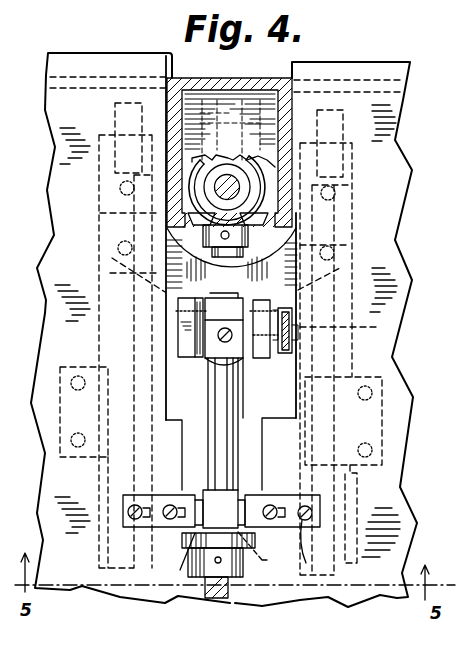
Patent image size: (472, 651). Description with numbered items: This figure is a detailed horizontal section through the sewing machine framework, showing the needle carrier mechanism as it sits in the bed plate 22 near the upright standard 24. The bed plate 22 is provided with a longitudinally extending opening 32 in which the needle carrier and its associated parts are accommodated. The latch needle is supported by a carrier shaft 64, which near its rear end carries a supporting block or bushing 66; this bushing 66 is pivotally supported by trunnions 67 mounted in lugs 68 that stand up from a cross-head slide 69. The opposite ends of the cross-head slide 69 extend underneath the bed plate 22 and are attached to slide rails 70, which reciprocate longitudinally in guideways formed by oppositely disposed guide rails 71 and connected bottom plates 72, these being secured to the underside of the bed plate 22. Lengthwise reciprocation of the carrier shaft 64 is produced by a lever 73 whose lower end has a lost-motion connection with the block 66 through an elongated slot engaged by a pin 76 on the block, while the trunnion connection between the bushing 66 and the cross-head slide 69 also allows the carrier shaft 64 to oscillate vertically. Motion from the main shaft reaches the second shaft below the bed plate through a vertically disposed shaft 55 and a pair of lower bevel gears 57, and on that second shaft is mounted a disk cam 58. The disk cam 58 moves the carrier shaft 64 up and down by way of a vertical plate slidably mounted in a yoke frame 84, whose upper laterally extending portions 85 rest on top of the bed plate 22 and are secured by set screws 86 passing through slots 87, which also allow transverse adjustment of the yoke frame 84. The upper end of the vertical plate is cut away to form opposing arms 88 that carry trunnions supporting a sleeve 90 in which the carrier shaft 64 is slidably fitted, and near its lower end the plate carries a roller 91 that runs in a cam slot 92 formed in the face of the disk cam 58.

The bed plate 22 is at (102, 53).
The upright standard 24 is at (292, 127).
The vertically disposed shaft 55 is at (256, 200).
The lower bevel gears 57 is at (192, 177).
The cross-head slide 69 is at (227, 271).
The guide rails 71 is at (110, 213).
The slide rails 70 is at (118, 274).
The supporting block or bushing 66 is at (232, 346).
The trunnions 67 is at (178, 306).
The lever 73 is at (292, 318).
The pin 76 is at (300, 337).
The lugs 68 is at (186, 348).
The carrier shaft 64 is at (213, 401).
The longitudinally extending opening 32 is at (258, 430).
The upper laterally extending portions 85 is at (147, 493).
The slots 87 is at (155, 505).
The opposing arms 88 is at (193, 505).
The set screws 86 is at (138, 527).
The yoke frame 84 is at (317, 545).
The sleeve 90 is at (220, 509).
The disk cam 58 is at (206, 550).
The cam slot 92 is at (180, 572).
The roller 91 is at (240, 584).
The bottom plates 72 is at (73, 417).